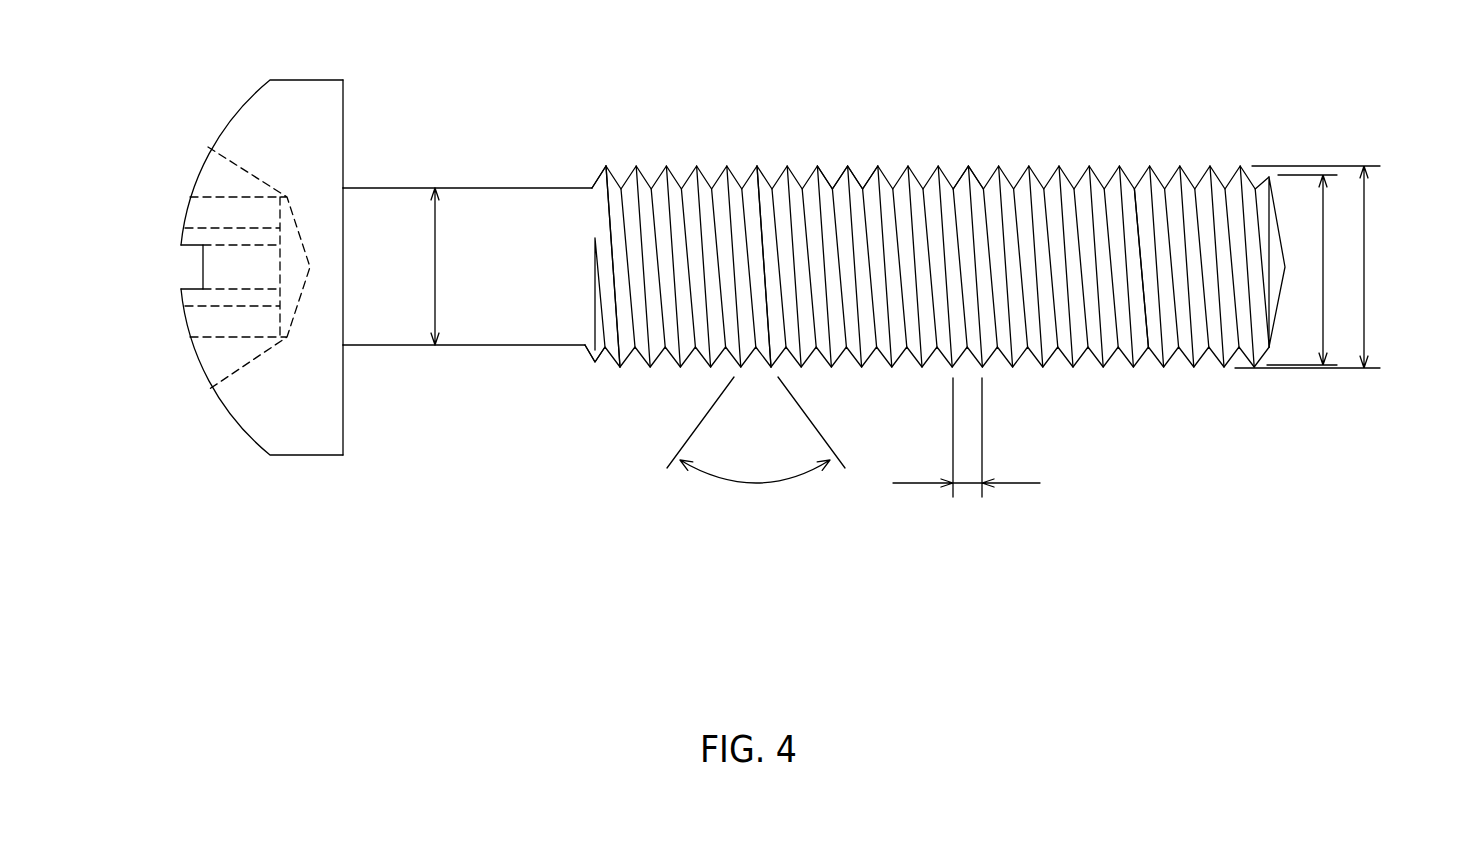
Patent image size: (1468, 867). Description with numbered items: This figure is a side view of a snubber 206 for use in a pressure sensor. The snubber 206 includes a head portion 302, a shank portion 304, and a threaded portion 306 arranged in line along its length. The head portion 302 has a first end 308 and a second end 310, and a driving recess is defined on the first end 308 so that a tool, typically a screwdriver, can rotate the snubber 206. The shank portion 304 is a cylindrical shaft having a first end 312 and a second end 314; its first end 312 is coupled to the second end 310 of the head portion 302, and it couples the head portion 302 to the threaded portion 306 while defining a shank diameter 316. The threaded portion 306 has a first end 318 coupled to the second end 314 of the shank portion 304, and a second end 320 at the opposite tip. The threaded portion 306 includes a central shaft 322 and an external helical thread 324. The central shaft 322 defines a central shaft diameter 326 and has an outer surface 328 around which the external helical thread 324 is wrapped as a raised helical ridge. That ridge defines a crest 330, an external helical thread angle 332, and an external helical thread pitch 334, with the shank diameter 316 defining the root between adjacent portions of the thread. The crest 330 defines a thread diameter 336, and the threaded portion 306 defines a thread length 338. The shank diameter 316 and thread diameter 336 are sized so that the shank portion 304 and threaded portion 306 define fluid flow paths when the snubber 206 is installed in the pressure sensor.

The head portion 302 is at (247, 112).
The shank portion 304 is at (533, 217).
The threaded portion 306 is at (1073, 180).
The first end 308 is at (190, 175).
The snubber 206 is at (197, 362).
The second end 310 is at (345, 107).
The first end 312 is at (343, 217).
The second end 314 is at (593, 290).
The shank diameter 316 is at (437, 240).
The first end 318 is at (580, 217).
The second end 320 is at (1285, 267).
The central shaft 322 is at (755, 213).
The external helical thread 324 is at (873, 180).
The central shaft diameter 326 is at (1323, 368).
The outer surface 328 is at (1140, 338).
The crest 330 is at (968, 167).
The external helical thread angle 332 is at (757, 483).
The external helical thread pitch 334 is at (967, 483).
The thread diameter 336 is at (1364, 166).
The thread length 338 is at (590, 186).